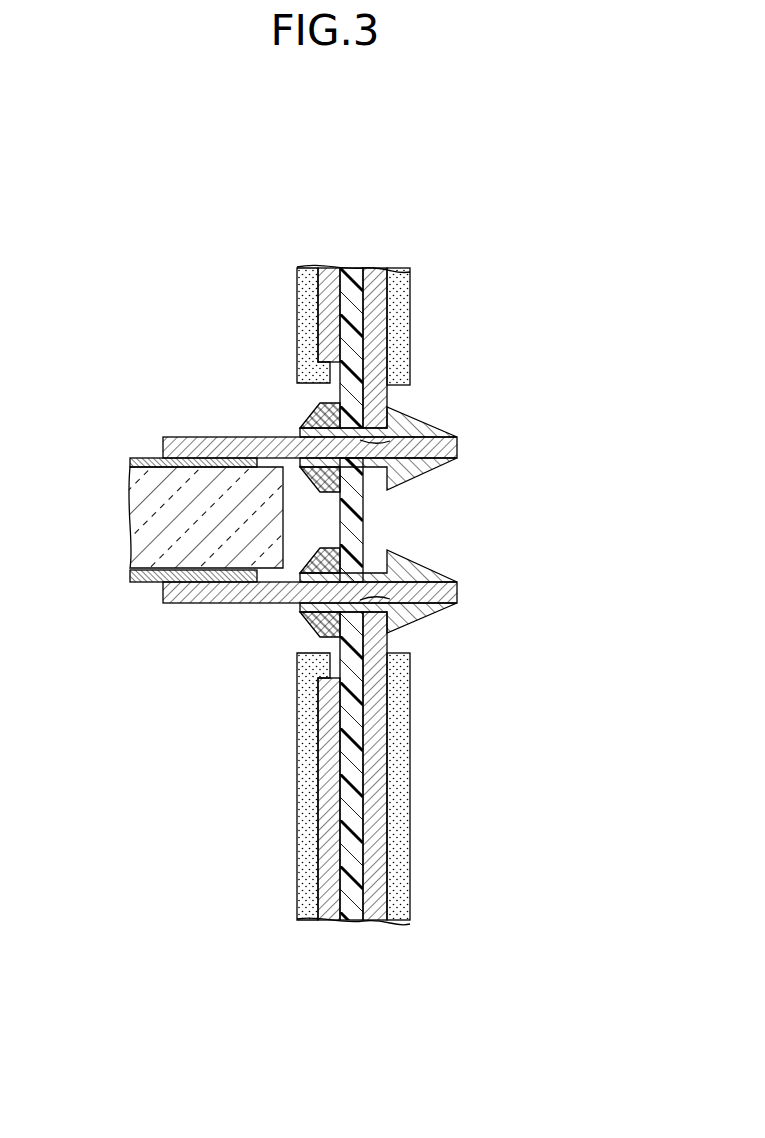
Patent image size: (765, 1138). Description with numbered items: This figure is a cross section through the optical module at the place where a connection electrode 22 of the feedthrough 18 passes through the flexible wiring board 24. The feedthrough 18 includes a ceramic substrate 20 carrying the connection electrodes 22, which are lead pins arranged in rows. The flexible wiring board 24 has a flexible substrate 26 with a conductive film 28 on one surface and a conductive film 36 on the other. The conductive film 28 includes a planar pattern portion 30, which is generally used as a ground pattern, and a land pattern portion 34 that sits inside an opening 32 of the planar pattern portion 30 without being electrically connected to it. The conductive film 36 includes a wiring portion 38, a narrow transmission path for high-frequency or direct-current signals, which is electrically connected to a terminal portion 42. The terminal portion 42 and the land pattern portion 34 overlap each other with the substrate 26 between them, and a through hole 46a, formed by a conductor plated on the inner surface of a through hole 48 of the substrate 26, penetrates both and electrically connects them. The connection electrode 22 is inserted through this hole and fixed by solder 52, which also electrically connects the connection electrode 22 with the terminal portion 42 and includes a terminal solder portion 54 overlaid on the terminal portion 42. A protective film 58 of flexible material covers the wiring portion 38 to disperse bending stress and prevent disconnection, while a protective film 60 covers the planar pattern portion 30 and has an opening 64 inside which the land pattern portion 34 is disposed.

The feedthrough 18 is at (108, 598).
The ceramic substrate 20 is at (140, 540).
The connection electrode 22 is at (458, 444).
The flexible wiring board 24 is at (410, 173).
The substrate 26 is at (348, 921).
The conductive film 28 is at (330, 930).
The planar pattern portion 30 is at (318, 296).
The opening 32 is at (326, 366).
The land pattern portion 34 is at (315, 399).
The conductive film 36 is at (372, 937).
The wiring portion 38 is at (392, 332).
The terminal portion 42 is at (392, 410).
The through hole 46a is at (372, 440).
The through hole 48 is at (362, 466).
The solder 52 is at (312, 470).
The terminal solder portion 54 is at (420, 468).
The protective film 58 is at (398, 924).
The protective film 60 is at (312, 925).
The opening 64 is at (298, 386).